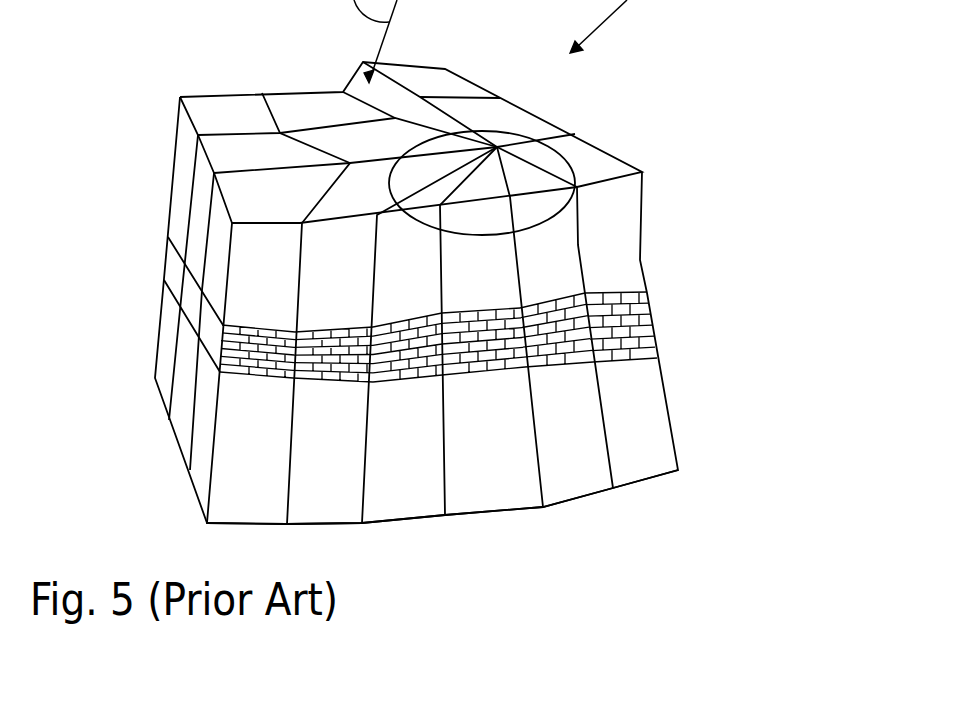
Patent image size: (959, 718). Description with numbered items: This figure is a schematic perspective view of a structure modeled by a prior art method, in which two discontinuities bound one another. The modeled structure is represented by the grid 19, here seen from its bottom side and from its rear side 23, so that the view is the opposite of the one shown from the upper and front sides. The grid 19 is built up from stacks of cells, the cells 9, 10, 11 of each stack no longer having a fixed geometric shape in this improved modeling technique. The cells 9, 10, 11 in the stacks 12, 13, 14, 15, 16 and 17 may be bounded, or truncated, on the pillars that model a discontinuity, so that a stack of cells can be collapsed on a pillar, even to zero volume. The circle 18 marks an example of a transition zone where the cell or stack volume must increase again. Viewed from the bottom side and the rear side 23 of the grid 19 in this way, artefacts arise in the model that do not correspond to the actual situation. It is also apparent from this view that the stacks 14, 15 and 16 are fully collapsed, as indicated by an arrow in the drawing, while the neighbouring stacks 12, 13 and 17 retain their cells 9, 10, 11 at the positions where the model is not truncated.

The cell 9 is at (218, 333).
The cell 10 is at (207, 424).
The cell 11 is at (223, 236).
The stack 12 is at (247, 127).
The stack 13 is at (317, 128).
The stack 14 is at (389, 497).
The stack 15 is at (467, 497).
The stack 16 is at (559, 495).
The stack 17 is at (654, 474).
The circle 18 is at (567, 168).
The grid 19 is at (692, 385).
The rear side 23 is at (525, 533).